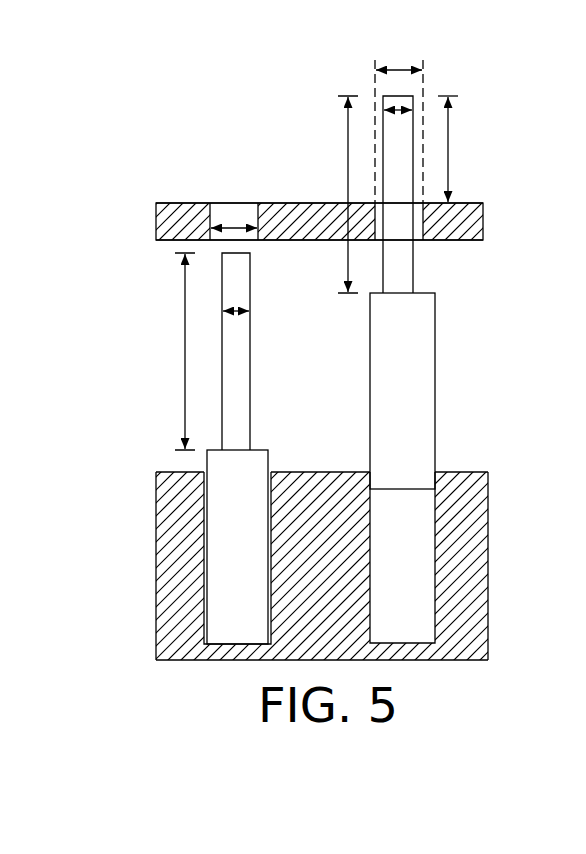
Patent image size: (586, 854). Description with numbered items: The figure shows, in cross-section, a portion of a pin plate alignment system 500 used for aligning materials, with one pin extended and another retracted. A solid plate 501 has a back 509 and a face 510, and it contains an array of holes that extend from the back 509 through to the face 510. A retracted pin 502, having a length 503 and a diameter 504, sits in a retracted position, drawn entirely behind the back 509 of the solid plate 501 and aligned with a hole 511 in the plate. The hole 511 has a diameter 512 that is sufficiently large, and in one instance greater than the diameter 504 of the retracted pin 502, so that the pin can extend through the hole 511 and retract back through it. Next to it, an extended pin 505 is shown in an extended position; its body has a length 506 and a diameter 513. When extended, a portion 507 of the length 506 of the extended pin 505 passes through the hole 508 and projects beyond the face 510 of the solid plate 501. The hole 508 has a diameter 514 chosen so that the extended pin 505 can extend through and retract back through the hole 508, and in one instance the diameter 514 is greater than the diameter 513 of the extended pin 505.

The pin plate alignment system 500 is at (99, 117).
The solid plate 501 is at (176, 204).
The retracted pin 502 is at (240, 385).
The length 503 is at (185, 342).
The diameter 504 is at (234, 308).
The extended pin 505 is at (403, 270).
The length 506 is at (347, 158).
The portion 507 is at (449, 158).
The hole 508 is at (418, 227).
The back 509 is at (468, 242).
The face 510 is at (468, 203).
The hole 511 is at (226, 212).
The diameter 512 is at (238, 224).
The diameter 513 is at (401, 107).
The diameter 514 is at (400, 67).